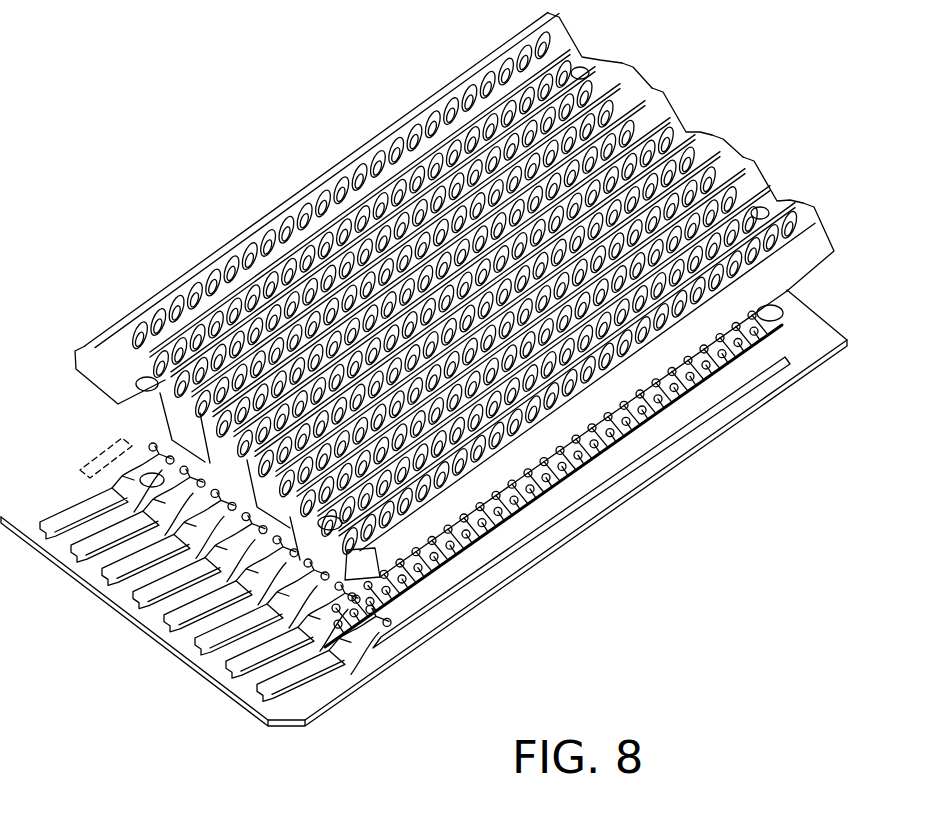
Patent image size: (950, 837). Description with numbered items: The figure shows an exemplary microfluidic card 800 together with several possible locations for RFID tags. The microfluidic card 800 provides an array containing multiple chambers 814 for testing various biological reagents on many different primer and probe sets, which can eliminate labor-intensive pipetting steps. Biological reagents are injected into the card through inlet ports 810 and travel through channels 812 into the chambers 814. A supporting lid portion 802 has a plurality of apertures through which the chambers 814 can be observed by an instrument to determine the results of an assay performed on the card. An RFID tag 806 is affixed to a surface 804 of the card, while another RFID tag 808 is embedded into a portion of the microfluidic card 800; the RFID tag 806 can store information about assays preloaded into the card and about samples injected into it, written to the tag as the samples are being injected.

The microfluidic card 800 is at (268, 114).
The supporting lid portion 802 is at (827, 229).
The surface 804 is at (818, 342).
The RFID tag 806 is at (572, 508).
The RFID tag 808 is at (98, 463).
The inlet ports 810 is at (328, 662).
The channels 812 is at (356, 634).
The chambers 814 is at (702, 405).